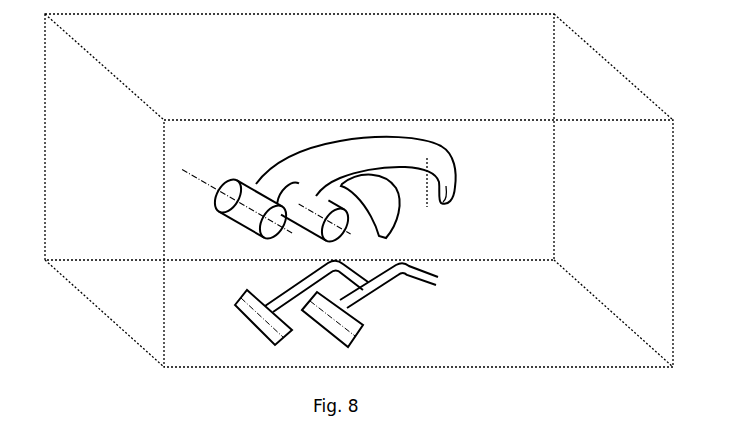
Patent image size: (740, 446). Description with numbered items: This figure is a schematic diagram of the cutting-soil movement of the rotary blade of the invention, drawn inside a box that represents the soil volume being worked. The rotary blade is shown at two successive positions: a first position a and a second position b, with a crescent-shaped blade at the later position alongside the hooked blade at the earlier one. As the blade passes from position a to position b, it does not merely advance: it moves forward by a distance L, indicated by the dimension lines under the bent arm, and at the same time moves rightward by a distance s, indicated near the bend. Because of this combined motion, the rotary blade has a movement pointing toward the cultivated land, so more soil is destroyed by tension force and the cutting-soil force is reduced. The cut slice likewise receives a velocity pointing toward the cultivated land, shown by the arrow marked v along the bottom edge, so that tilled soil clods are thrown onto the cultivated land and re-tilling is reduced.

The first position of rotary blade a is at (322, 160).
The second position of rotary blade b is at (457, 191).
The forward movement distance L is at (401, 292).
The rightward movement distance s is at (420, 254).
The feed velocity v is at (326, 367).